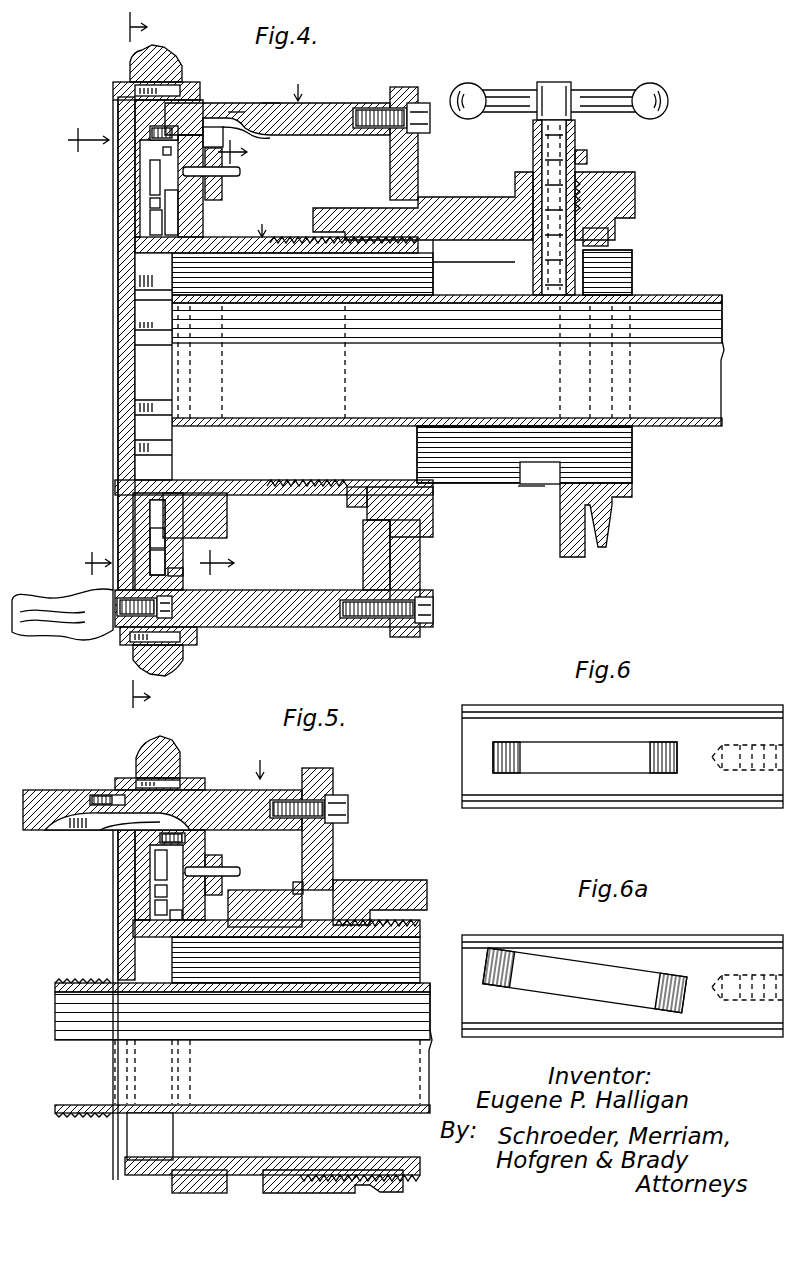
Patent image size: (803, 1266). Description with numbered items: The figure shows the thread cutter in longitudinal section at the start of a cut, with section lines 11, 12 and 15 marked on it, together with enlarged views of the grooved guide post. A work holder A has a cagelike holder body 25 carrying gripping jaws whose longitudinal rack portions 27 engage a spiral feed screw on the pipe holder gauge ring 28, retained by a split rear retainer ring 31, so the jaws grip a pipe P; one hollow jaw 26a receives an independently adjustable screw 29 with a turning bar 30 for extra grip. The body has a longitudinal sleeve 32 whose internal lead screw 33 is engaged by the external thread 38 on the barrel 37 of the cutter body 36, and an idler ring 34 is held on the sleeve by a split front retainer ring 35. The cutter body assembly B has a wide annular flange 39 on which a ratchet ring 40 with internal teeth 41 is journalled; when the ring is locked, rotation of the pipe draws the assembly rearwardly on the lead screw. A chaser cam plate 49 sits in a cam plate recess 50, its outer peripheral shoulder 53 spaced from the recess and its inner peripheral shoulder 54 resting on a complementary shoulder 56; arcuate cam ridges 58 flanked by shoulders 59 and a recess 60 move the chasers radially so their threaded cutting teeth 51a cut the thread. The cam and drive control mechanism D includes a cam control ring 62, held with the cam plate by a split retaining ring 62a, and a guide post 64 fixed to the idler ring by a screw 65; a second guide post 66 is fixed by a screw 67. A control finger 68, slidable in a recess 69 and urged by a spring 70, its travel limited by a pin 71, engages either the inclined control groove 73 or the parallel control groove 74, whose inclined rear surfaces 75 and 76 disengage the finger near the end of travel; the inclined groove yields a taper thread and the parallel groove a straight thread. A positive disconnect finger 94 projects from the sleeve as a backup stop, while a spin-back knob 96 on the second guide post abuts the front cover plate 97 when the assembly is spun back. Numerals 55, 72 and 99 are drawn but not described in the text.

In FIG. 4, the section line 11- 11 is at (120, 362).
In FIG. 4, the section line 12- 12 is at (74, 351).
In FIG. 4, the section line 15- 15 is at (239, 359).
In FIG. 4, the cagelike holder body 25 is at (484, 498).
In FIG. 5, the cagelike holder body 25 is at (417, 874).
In FIG. 4, the hollow pipe gripping jaw 26a is at (540, 155).
In FIG. 4, the longitudinal rack portions 27 is at (583, 152).
In FIG. 4, the pipe holder gauge ring 28 is at (592, 175).
In FIG. 4, the independently adjustable screw 29 is at (562, 84).
In FIG. 4, the turning bar 30 is at (620, 90).
In FIG. 4, the split rear retainer ring 31 is at (612, 234).
In FIG. 4, the longitudinal sleeve 32 is at (372, 520).
In FIG. 5, the longitudinal sleeve 32 is at (283, 1175).
In FIG. 4, the lead screw 33 is at (352, 494).
In FIG. 4, the idler ring 34 is at (408, 87).
In FIG. 5, the idler ring 34 is at (320, 768).
In FIG. 4, the split front retainer ring 35 is at (385, 535).
In FIG. 5, the split front retainer ring 35 is at (293, 892).
In FIG. 4, the cutter body 36 is at (292, 231).
In FIG. 5, the cutter body 36 is at (422, 934).
In FIG. 4, the barrel 37 is at (268, 494).
In FIG. 4, the external thread 38 is at (293, 494).
In FIG. 5, the external thread 38 is at (405, 1178).
In FIG. 4, the annular flange 39 is at (155, 203).
In FIG. 4, the ratchet ring 40 is at (130, 67).
In FIG. 5, the ratchet ring 40 is at (140, 750).
In FIG. 4, the internal teeth 41 is at (150, 84).
In FIG. 5, the internal teeth 41 is at (155, 762).
In FIG. 4, the chaser cam plate 49 is at (170, 226).
In FIG. 4, the cam plate recess 50 is at (155, 167).
In FIG. 4, the threaded cutting teeth 51a is at (140, 325).
In FIG. 4, the outer peripheral shoulder 53 is at (185, 572).
In FIG. 5, the inner peripheral shoulder 54 is at (168, 918).
In FIG. 4, the screw 55 is at (163, 151).
In FIG. 4, the complementary shoulder 56 is at (150, 490).
In FIG. 4, the arcuate cam ridges 58 is at (165, 532).
In FIG. 5, the arcuate cam ridges 58 is at (155, 878).
In FIG. 4, the flanking shoulders 59 is at (160, 556).
In FIG. 5, the flanking shoulders 59 is at (155, 893).
In FIG. 5, the recess 60 is at (160, 906).
In FIG. 4, the cam control ring 62 is at (214, 211).
In FIG. 4, the split retaining ring 62a is at (228, 500).
In FIG. 4, the guide post 64 is at (300, 103).
In FIG. 5, the guide post 64 is at (232, 790).
In FIG. 6, the guide post 64 is at (712, 708).
In FIG. 6A, the guide post 64 is at (712, 935).
In FIG. 4, the screw 65 is at (430, 130).
In FIG. 5, the screw 65 is at (345, 800).
In FIG. 4, the second guide post 66 is at (252, 627).
In FIG. 4, the screw 67 is at (434, 610).
In FIG. 4, the control finger 68 is at (180, 128).
In FIG. 5, the control finger 68 is at (195, 830).
In FIG. 4, the recess 69 is at (135, 246).
In FIG. 4, the spring 70 is at (160, 218).
In FIG. 5, the spring 70 is at (175, 938).
In FIG. 4, the pin 71 is at (240, 171).
In FIG. 5, the pin 71 is at (240, 876).
In FIG. 4, the block 72 is at (222, 187).
In FIG. 5, the block 72 is at (222, 870).
In FIG. 4, the inclined control groove 73 is at (235, 112).
In FIG. 5, the inclined control groove 73 is at (100, 795).
In FIG. 6A, the inclined control groove 73 is at (520, 960).
In FIG. 4, the parallel control groove 74 is at (228, 125).
In FIG. 5, the parallel control groove 74 is at (80, 824).
In FIG. 6, the parallel control groove 74 is at (515, 745).
In FIG. 4, the inclined rear surface 75 is at (272, 103).
In FIG. 4, the inclined rear surface 76 is at (258, 136).
In FIG. 4, the positive disconnect finger 94 is at (325, 210).
In FIG. 5, the positive disconnect finger 94 is at (255, 890).
In FIG. 4, the spin-back knob 96 is at (52, 628).
In FIG. 4, the front cover plate 97 is at (113, 585).
In FIG. 5, the front cover plate 97 is at (117, 840).
In FIG. 4, the body 99 is at (183, 97).
In FIG. 5, the body 99 is at (185, 790).
In FIG. 4, the work holder A is at (522, 490).
In FIG. 4, the cutter body assembly B is at (262, 220).
In FIG. 4, the cam and drive control mechanism D is at (300, 81).
In FIG. 5, the cam and drive control mechanism D is at (261, 758).
In FIG. 4, the pipe P is at (692, 295).
In FIG. 5, the pipe P is at (55, 1000).